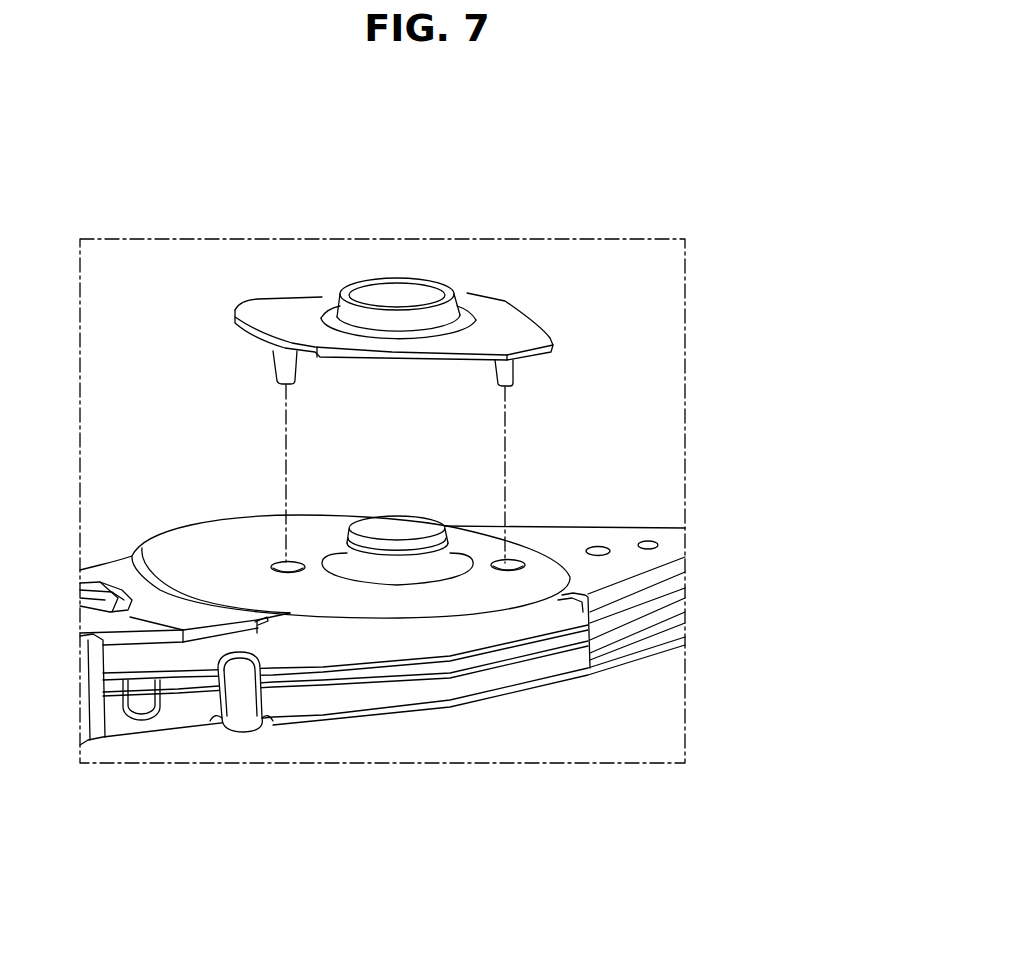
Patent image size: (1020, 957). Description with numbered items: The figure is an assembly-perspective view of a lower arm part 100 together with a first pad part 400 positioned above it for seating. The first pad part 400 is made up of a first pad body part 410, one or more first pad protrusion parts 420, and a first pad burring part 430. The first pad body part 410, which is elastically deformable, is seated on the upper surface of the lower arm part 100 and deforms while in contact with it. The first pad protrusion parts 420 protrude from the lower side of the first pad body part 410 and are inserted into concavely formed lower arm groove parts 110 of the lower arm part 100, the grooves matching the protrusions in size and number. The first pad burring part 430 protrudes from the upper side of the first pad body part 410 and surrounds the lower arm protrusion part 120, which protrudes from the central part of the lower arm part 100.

The lower arm part 100 is at (382, 708).
The lower arm groove part 110 is at (502, 568).
The lower arm protrusion part 120 is at (407, 545).
The first pad part 400 is at (500, 330).
The first pad body part 410 is at (490, 315).
The first pad protrusion part 420 is at (513, 373).
The first pad burring part 430 is at (388, 288).